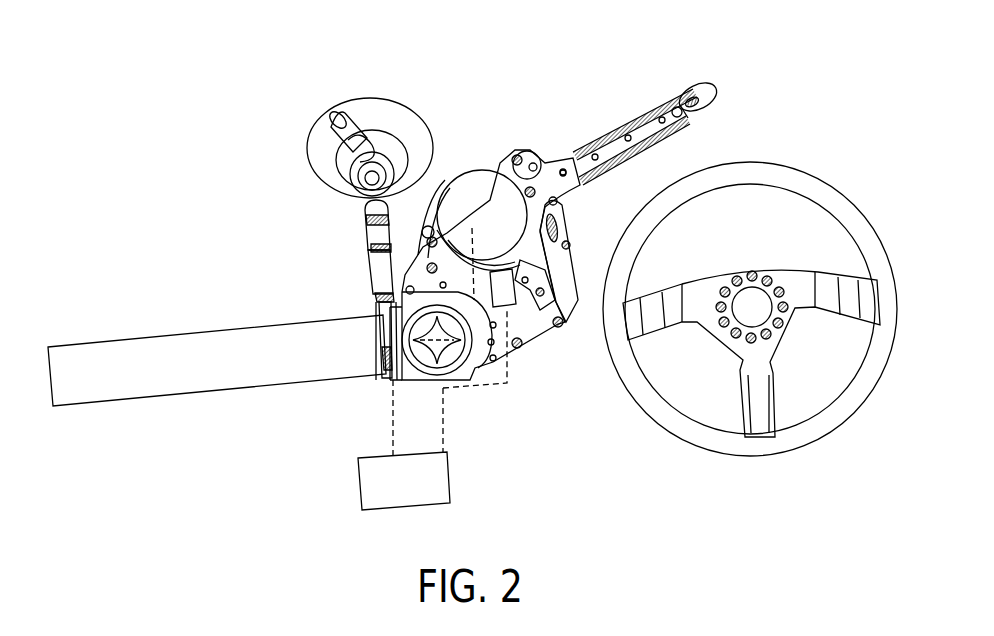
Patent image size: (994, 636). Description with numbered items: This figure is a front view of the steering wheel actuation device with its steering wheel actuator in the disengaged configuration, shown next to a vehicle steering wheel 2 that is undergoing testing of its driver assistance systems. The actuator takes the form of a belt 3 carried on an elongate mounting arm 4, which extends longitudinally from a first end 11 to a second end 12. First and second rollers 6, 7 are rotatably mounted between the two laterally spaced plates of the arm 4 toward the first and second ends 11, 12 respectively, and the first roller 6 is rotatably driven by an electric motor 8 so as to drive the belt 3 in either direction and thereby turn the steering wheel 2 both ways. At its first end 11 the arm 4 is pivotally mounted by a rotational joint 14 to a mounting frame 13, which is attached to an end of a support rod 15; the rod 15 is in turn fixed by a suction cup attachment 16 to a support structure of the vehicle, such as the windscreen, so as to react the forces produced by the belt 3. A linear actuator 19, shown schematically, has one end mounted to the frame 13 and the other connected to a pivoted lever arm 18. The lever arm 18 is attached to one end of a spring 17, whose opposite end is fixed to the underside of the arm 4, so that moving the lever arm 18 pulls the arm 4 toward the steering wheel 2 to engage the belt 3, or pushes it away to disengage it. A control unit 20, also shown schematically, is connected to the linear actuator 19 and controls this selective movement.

The steering wheel 2 is at (826, 155).
The belt 3 is at (612, 150).
The mounting arm 4 is at (600, 128).
The first roller 6 is at (465, 195).
The second roller 7 is at (702, 108).
The electric motor 8 is at (428, 232).
The first end 11 is at (425, 243).
The second end 12 is at (694, 92).
The mounting frame 13 is at (507, 343).
The rotational joint 14 is at (425, 240).
The support rod 15 is at (282, 367).
The suction cup attachment 16 is at (360, 110).
The spring 17 is at (565, 240).
The lever arm 18 is at (533, 200).
The linear actuator 19 is at (497, 265).
The control unit 20 is at (404, 481).